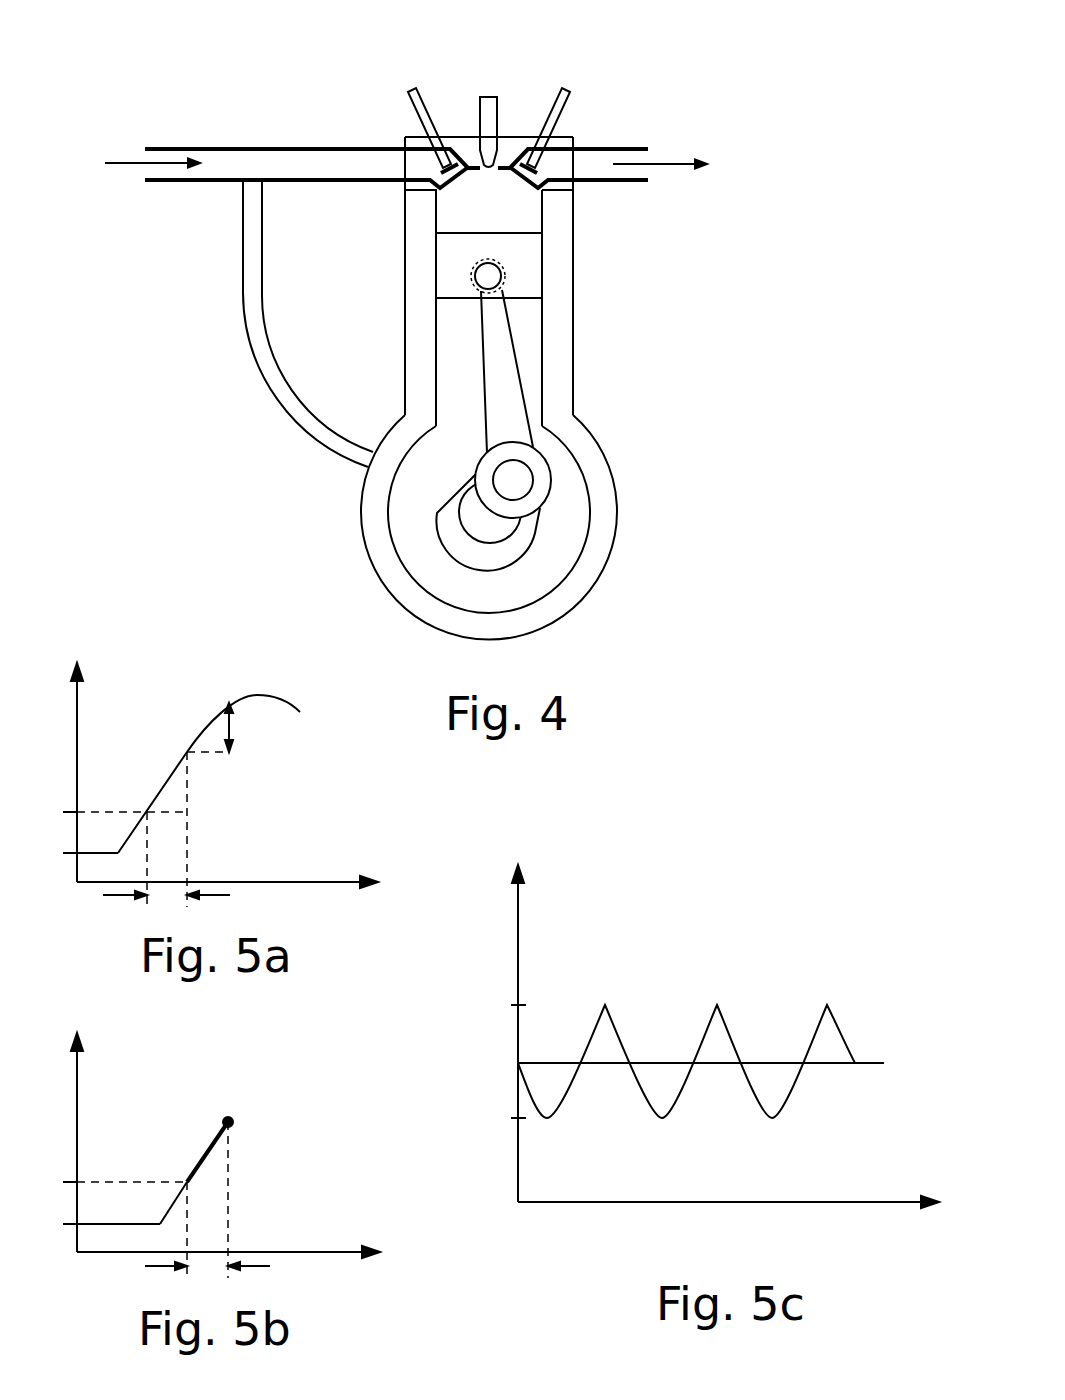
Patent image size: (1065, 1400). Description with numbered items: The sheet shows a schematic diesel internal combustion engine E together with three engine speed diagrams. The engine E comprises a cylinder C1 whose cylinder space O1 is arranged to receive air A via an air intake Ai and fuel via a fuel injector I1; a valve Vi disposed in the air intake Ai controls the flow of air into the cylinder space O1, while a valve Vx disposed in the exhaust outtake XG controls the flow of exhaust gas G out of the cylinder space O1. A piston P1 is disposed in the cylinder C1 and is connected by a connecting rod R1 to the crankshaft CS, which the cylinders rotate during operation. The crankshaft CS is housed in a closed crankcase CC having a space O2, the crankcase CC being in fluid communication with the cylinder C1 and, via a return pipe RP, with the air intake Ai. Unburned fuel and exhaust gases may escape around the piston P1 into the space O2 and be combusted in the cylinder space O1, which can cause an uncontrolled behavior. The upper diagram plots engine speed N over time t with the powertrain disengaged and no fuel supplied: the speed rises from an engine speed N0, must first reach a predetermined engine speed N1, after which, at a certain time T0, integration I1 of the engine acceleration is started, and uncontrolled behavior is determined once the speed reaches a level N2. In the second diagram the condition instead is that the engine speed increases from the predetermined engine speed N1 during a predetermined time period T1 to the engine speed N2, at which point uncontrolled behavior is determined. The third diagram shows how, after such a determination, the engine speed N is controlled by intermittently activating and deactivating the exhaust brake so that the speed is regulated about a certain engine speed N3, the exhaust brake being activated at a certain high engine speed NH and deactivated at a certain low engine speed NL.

In FIG. 4, the internal combustion engine E is at (617, 53).
In FIG. 4, the air A is at (125, 160).
In FIG. 4, the air intake Ai is at (288, 146).
In FIG. 4, the exhaust outtake XG is at (618, 146).
In FIG. 4, the exhaust gas G is at (660, 165).
In FIG. 4, the valve Vi is at (408, 120).
In FIG. 4, the valve Vx is at (545, 114).
In FIG. 4, the cylinder C1 is at (512, 125).
In FIG. 4, the fuel injector I1 is at (470, 128).
In FIG. 5A, the fuel injector I1 is at (176, 743).
In FIG. 4, the cylinder space O1 is at (503, 207).
In FIG. 4, the piston P1 is at (427, 262).
In FIG. 4, the connecting rod R1 is at (522, 354).
In FIG. 4, the crankshaft CS is at (480, 523).
In FIG. 4, the crankcase CC is at (606, 446).
In FIG. 4, the space O2 is at (560, 543).
In FIG. 4, the return pipe RP is at (270, 411).
In FIG. 5A, the engine speed N is at (63, 768).
In FIG. 5B, the engine speed N is at (63, 1139).
In FIG. 5C, the engine speed N is at (503, 1031).
In FIG. 5A, the time t is at (240, 901).
In FIG. 5B, the time t is at (232, 1271).
In FIG. 5C, the time t is at (733, 1220).
In FIG. 5A, the engine speed N0 is at (73, 853).
In FIG. 5B, the engine speed N0 is at (94, 1224).
In FIG. 5A, the predetermined engine speed N1 is at (107, 812).
In FIG. 5B, the predetermined engine speed N1 is at (107, 1197).
In FIG. 5A, the engine speed level N2 is at (214, 694).
In FIG. 5B, the engine speed level N2 is at (228, 1122).
In FIG. 5A, the time T0 is at (166, 867).
In FIG. 5B, the predetermined time period T1 is at (207, 1207).
In FIG. 5C, the high engine speed NH is at (495, 1005).
In FIG. 5C, the low engine speed NL is at (497, 1118).
In FIG. 5C, the engine speed N3 is at (678, 1061).